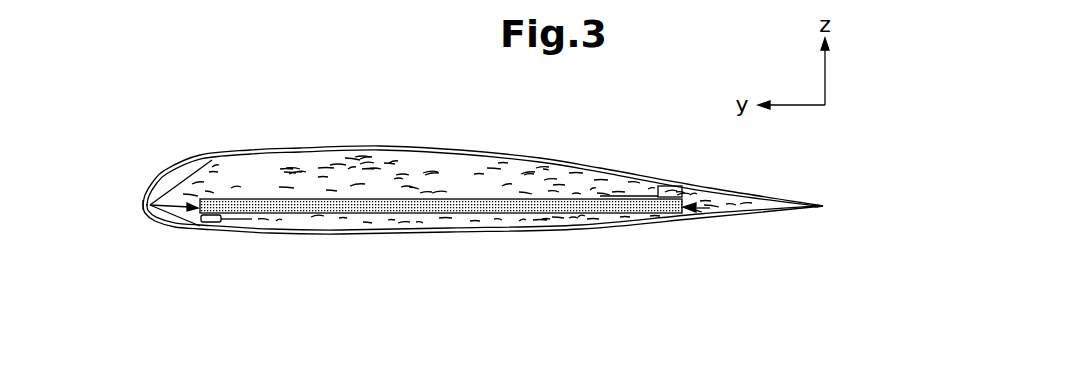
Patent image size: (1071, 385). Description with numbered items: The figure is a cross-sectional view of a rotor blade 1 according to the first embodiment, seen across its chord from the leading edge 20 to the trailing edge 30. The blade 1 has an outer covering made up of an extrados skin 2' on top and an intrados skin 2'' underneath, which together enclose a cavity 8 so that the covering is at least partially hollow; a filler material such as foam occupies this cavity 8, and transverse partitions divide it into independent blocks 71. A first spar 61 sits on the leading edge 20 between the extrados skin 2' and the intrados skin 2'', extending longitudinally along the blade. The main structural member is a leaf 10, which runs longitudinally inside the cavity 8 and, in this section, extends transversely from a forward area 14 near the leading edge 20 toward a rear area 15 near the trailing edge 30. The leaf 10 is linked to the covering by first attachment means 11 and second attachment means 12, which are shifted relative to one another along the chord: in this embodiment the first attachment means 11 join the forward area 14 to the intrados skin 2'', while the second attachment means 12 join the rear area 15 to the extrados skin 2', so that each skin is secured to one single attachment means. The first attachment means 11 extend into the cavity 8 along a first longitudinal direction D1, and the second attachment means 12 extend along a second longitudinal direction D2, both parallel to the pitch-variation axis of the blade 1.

The blade 1 is at (233, 104).
The extrados skin 2' is at (482, 145).
The intrados skin 2'' is at (482, 253).
The cavity 8 is at (457, 168).
The leaf 10 is at (395, 199).
The first attachment means 11 is at (220, 227).
The second attachment means 12 is at (658, 183).
The forward area 14 is at (144, 194).
The rear area 15 is at (697, 208).
The leading edge 20 is at (141, 205).
The trailing edge 30 is at (823, 206).
The first spar 61 is at (147, 209).
The independent blocks 71 is at (495, 217).
The first longitudinal direction D1 is at (243, 222).
The second longitudinal direction D2 is at (633, 192).